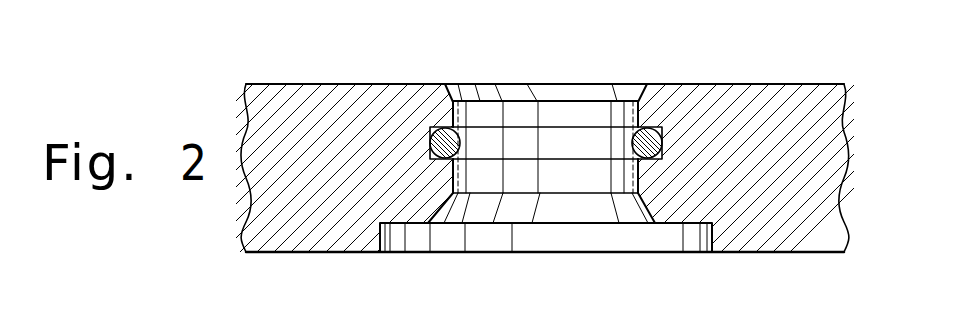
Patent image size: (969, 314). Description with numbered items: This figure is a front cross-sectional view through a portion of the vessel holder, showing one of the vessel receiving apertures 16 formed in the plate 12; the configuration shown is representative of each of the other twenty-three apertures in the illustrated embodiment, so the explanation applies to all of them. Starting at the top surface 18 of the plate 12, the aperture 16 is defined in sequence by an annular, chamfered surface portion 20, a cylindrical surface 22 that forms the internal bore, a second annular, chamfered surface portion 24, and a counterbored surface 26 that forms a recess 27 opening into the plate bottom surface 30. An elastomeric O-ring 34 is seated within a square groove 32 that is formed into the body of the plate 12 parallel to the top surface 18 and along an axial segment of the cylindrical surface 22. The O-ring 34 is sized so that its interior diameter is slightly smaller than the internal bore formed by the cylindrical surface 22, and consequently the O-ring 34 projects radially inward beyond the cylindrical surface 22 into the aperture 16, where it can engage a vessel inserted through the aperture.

The plate 12 is at (307, 244).
The vessel receiving aperture 16 is at (546, 160).
The top surface 18 is at (764, 85).
The annular chamfered surface portion 20 is at (448, 85).
The cylindrical surface 22 is at (456, 114).
The annular chamfered surface portion 24 is at (650, 200).
The counterbored surface 26 is at (418, 225).
The recess 27 is at (544, 242).
The plate bottom surface 30 is at (763, 253).
The square groove 32 is at (650, 127).
The O-ring 34 is at (634, 144).